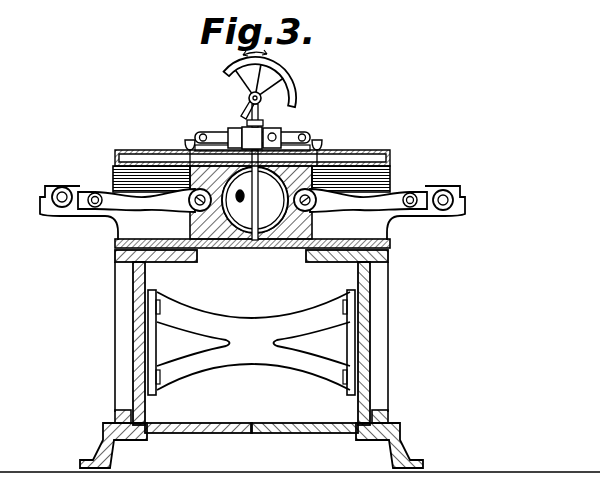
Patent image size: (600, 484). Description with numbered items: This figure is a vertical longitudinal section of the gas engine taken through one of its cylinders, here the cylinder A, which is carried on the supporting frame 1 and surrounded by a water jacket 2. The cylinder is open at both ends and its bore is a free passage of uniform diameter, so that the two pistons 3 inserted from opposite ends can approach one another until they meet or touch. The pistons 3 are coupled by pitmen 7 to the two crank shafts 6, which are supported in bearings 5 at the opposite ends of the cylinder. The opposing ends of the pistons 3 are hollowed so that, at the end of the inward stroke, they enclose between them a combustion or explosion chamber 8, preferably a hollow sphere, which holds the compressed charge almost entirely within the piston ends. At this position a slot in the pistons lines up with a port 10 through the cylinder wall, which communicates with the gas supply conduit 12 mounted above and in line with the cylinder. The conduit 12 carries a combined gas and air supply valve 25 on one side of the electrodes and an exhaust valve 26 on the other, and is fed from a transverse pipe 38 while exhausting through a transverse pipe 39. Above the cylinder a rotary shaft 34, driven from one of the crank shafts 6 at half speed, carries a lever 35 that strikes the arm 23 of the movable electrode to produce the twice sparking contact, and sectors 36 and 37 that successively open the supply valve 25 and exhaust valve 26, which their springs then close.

The supporting frame 1 is at (115, 305).
The water jacket 2 is at (366, 160).
The pistons 3 is at (197, 226).
The bearings 5 is at (40, 210).
The crank shafts 6 is at (60, 191).
The pitmen 7 is at (160, 203).
The combustion or explosion chamber 8 is at (255, 200).
The port 10 is at (189, 156).
The gas supply conduit 12 is at (230, 132).
The arm of the movable electrode 23 is at (261, 130).
The combined gas and air supply valve 25 is at (284, 132).
The exhaust valve 26 is at (236, 128).
The rotary shaft 34 is at (230, 84).
The lever 35 is at (249, 99).
The sector 36 is at (294, 95).
The sector 37 is at (244, 70).
The transverse pipe 38 is at (320, 140).
The transverse pipe 39 is at (188, 142).
The cylinder A is at (128, 150).